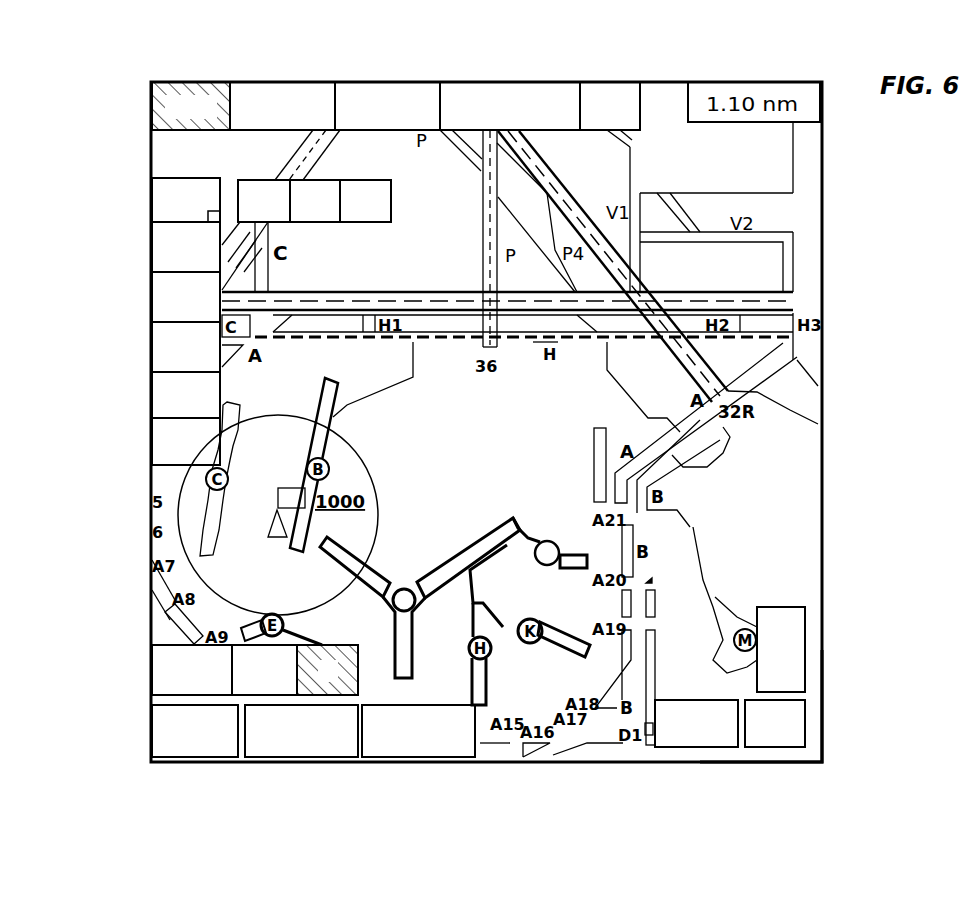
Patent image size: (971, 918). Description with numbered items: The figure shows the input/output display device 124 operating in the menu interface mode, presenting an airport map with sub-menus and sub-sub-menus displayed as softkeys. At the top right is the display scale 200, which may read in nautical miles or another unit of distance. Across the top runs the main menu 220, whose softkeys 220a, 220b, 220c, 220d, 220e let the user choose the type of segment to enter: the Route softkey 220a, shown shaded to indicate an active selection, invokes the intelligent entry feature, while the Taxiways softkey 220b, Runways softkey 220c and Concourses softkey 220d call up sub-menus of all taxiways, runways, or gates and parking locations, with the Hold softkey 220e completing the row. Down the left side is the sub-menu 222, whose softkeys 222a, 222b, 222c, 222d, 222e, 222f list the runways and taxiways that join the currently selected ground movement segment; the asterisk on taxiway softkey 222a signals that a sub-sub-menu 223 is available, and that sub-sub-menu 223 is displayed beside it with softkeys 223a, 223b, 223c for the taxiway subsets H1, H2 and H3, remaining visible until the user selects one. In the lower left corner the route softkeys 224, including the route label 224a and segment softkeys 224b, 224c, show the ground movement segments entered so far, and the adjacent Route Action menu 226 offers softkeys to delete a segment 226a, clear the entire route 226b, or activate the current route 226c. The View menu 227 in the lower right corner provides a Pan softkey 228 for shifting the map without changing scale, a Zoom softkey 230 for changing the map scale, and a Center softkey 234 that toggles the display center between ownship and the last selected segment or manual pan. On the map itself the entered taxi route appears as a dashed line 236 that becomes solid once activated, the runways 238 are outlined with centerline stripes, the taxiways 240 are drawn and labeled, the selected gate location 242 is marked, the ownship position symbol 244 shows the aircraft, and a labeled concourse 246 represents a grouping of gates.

The input/output display device 124 is at (838, 128).
The display scale 200 is at (750, 88).
The main menu 220 is at (135, 101).
The Route softkey 220a is at (216, 90).
The Taxiways softkey 220b is at (312, 90).
The Runways softkey 220c is at (418, 90).
The Concourses softkey 220d is at (548, 90).
The Hold softkey 220e is at (625, 90).
The sub-menu 222 is at (86, 280).
The taxiway sub-menu softkey H 222a is at (154, 197).
The sub-menu softkey 222b is at (154, 247).
The sub-menu softkey 222c is at (154, 297).
The sub-menu softkey 222d is at (154, 347).
The sub-menu softkey 222e is at (154, 395).
The sub-menu softkey 222f is at (154, 441).
The sub-sub-menu 223 is at (405, 191).
The taxiway identifier subset softkey H1 223a is at (267, 180).
The taxiway identifier subset softkey H2 223b is at (314, 222).
The taxiway identifier subset softkey H3 223c is at (378, 222).
The route softkeys 224 is at (142, 663).
The route softkey 224a is at (163, 688).
The segment softkey 224b is at (244, 696).
The segment softkey 224c is at (357, 696).
The Route Action menu 226 is at (142, 726).
The delete segment softkey 226a is at (175, 757).
The clear route softkey 226b is at (312, 750).
The activate route softkey 226c is at (415, 750).
The View menu 227 is at (852, 752).
The Pan softkey 228 is at (806, 631).
The Zoom softkey 230 is at (806, 705).
The Center softkey 234 is at (708, 742).
The dashed line 236 is at (326, 340).
The runway 238 is at (797, 291).
The taxiway 240 is at (592, 737).
The gate location 242 is at (283, 486).
The ownship position symbol 244 is at (270, 538).
The concourse 246 is at (553, 540).